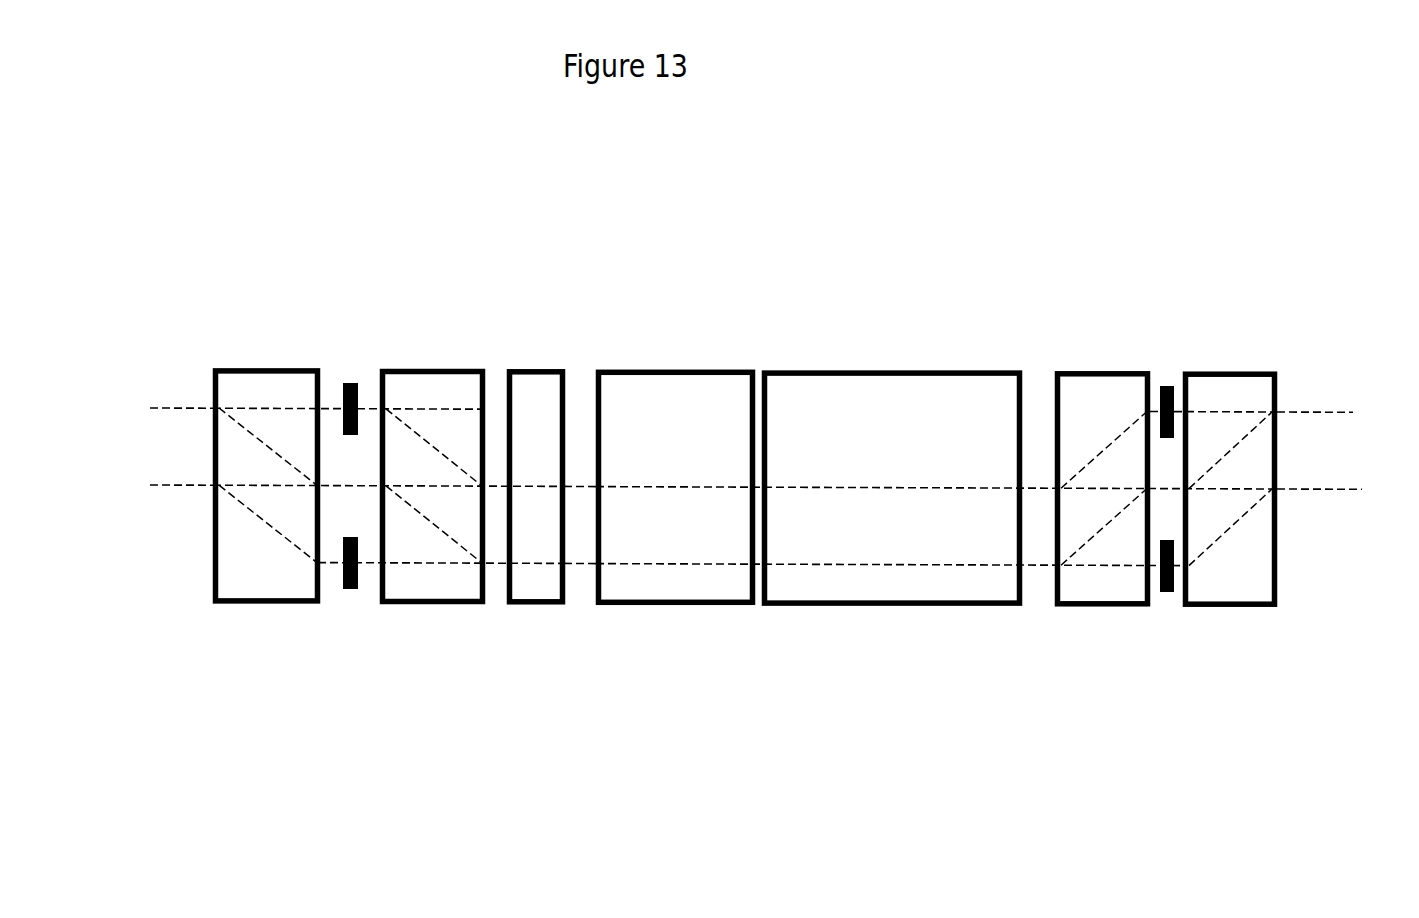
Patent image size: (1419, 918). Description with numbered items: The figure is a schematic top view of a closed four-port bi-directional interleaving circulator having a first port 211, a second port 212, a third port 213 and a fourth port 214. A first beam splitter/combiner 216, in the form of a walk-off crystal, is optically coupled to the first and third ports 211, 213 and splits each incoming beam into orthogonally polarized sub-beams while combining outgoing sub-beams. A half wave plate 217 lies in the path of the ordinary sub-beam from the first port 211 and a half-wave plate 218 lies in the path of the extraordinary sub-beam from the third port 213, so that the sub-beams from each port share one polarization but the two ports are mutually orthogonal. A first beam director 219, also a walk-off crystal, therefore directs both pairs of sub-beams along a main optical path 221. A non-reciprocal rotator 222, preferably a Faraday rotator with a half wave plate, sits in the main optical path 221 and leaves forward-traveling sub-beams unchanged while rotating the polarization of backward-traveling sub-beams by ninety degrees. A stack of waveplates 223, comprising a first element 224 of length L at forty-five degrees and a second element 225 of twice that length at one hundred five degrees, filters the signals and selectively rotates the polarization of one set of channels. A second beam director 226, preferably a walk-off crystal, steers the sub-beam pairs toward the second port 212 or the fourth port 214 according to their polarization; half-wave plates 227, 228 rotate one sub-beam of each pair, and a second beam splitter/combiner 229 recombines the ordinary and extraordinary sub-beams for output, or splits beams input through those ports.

The first port 211 is at (163, 407).
The second port 212 is at (1312, 412).
The third port 213 is at (176, 487).
The fourth port 214 is at (1340, 490).
The first beam splitter/combiner 216 is at (255, 588).
The half wave plate 217 is at (357, 383).
The half-wave plate 218 is at (357, 589).
The first beam director 219 is at (447, 588).
The main optical path 221 is at (575, 487).
The non-reciprocal rotator 222 is at (536, 382).
The stack of waveplates 223 is at (752, 333).
The first element 224 is at (687, 605).
The second element 225 is at (902, 605).
The second beam director 226 is at (1082, 385).
The half-wave plate 227 is at (1170, 385).
The half-wave plate 228 is at (1172, 593).
The second beam splitter/combiner 229 is at (1250, 590).